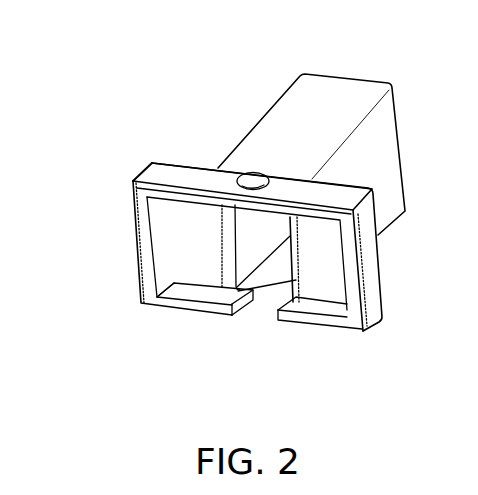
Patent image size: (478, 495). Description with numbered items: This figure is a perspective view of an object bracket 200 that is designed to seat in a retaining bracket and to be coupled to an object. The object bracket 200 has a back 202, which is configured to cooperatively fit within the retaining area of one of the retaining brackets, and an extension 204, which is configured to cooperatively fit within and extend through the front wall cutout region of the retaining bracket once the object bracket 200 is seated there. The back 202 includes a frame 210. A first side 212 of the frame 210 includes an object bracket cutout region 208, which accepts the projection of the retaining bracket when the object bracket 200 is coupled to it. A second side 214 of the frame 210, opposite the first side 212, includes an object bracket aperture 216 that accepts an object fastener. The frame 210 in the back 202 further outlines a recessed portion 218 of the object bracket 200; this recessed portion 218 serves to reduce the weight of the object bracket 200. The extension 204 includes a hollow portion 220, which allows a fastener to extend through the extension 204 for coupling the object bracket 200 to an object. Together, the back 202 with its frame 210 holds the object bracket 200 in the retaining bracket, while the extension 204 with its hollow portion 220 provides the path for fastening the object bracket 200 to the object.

The object bracket 200 is at (174, 61).
The back 202 is at (126, 156).
The extension 204 is at (297, 98).
The object bracket cutout region 208 is at (247, 320).
The frame 210 is at (347, 259).
The first side 212 is at (188, 297).
The second side 214 is at (200, 177).
The object bracket aperture 216 is at (268, 173).
The recessed portion 218 is at (176, 254).
The hollow portion 220 is at (258, 248).